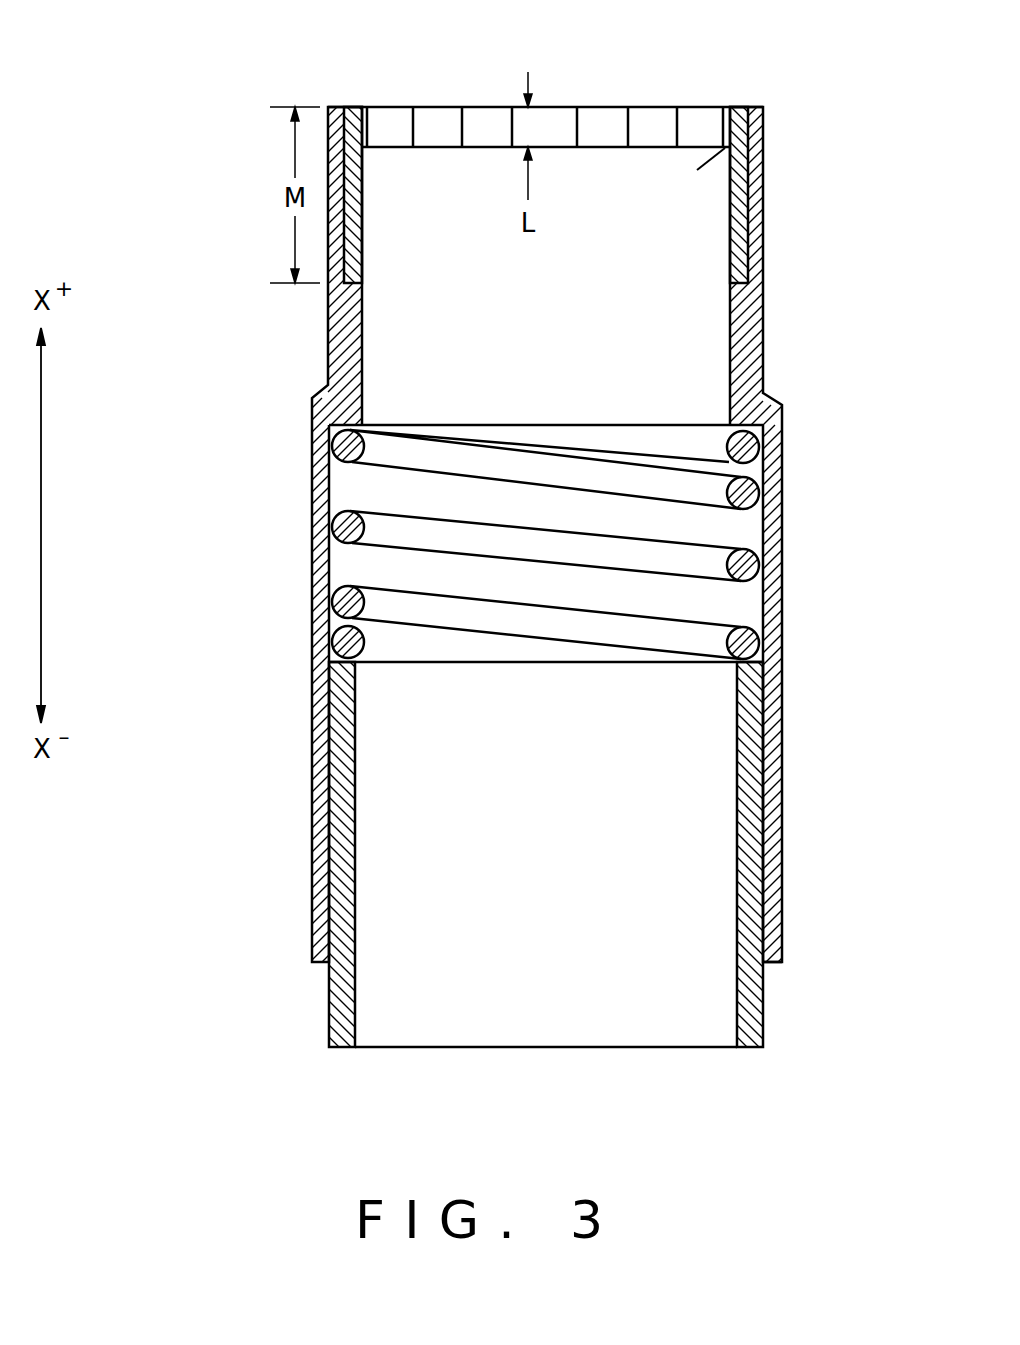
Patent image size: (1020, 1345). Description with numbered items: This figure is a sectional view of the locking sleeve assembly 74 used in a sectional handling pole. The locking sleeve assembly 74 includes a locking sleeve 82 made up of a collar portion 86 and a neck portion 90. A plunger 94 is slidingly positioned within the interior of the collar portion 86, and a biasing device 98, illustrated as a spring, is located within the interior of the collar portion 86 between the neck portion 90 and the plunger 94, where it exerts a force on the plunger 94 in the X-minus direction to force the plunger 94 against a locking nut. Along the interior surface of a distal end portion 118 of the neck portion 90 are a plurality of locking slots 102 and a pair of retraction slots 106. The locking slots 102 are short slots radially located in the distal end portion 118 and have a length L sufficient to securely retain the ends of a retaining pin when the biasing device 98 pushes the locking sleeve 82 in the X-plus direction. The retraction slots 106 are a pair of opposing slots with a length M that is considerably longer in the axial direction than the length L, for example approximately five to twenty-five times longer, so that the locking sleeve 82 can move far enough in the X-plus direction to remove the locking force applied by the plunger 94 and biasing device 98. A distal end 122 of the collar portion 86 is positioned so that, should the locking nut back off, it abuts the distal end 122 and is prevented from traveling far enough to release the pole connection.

The locking sleeve assembly 74 is at (565, 551).
The locking sleeve 82 is at (790, 532).
The collar portion 86 is at (783, 772).
The neck portion 90 is at (327, 347).
The plunger 94 is at (584, 1022).
The biasing device 98 is at (387, 530).
The locking slots 102 is at (700, 118).
The retraction slots 106 is at (743, 213).
The distal end portion 118 is at (762, 108).
The distal end 122 is at (777, 966).